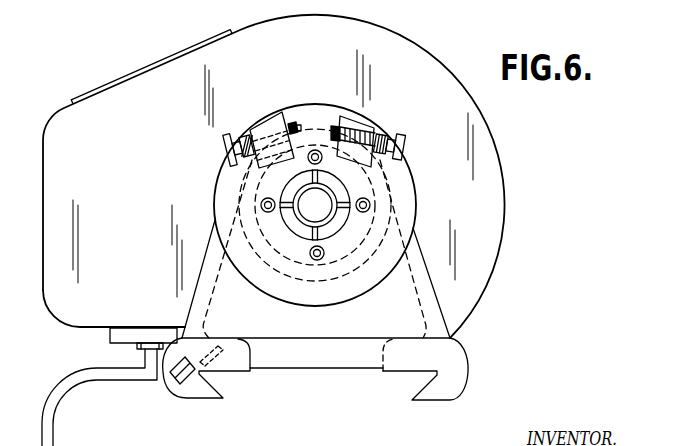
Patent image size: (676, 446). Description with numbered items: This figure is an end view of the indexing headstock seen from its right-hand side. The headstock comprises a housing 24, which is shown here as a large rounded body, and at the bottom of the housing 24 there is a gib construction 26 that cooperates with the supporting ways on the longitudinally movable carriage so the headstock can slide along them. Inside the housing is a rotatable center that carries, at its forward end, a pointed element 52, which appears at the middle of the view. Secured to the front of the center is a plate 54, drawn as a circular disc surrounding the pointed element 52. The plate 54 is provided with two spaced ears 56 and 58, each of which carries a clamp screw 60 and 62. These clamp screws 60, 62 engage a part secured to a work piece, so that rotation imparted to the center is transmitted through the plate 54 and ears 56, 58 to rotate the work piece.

The housing 24 is at (410, 40).
The gib construction 26 is at (467, 363).
The pointed element 52 is at (318, 208).
The plate 54 is at (407, 200).
The ear 56 is at (364, 126).
The ear 58 is at (268, 125).
The clamp screw 60 is at (403, 141).
The clamp screw 62 is at (222, 142).